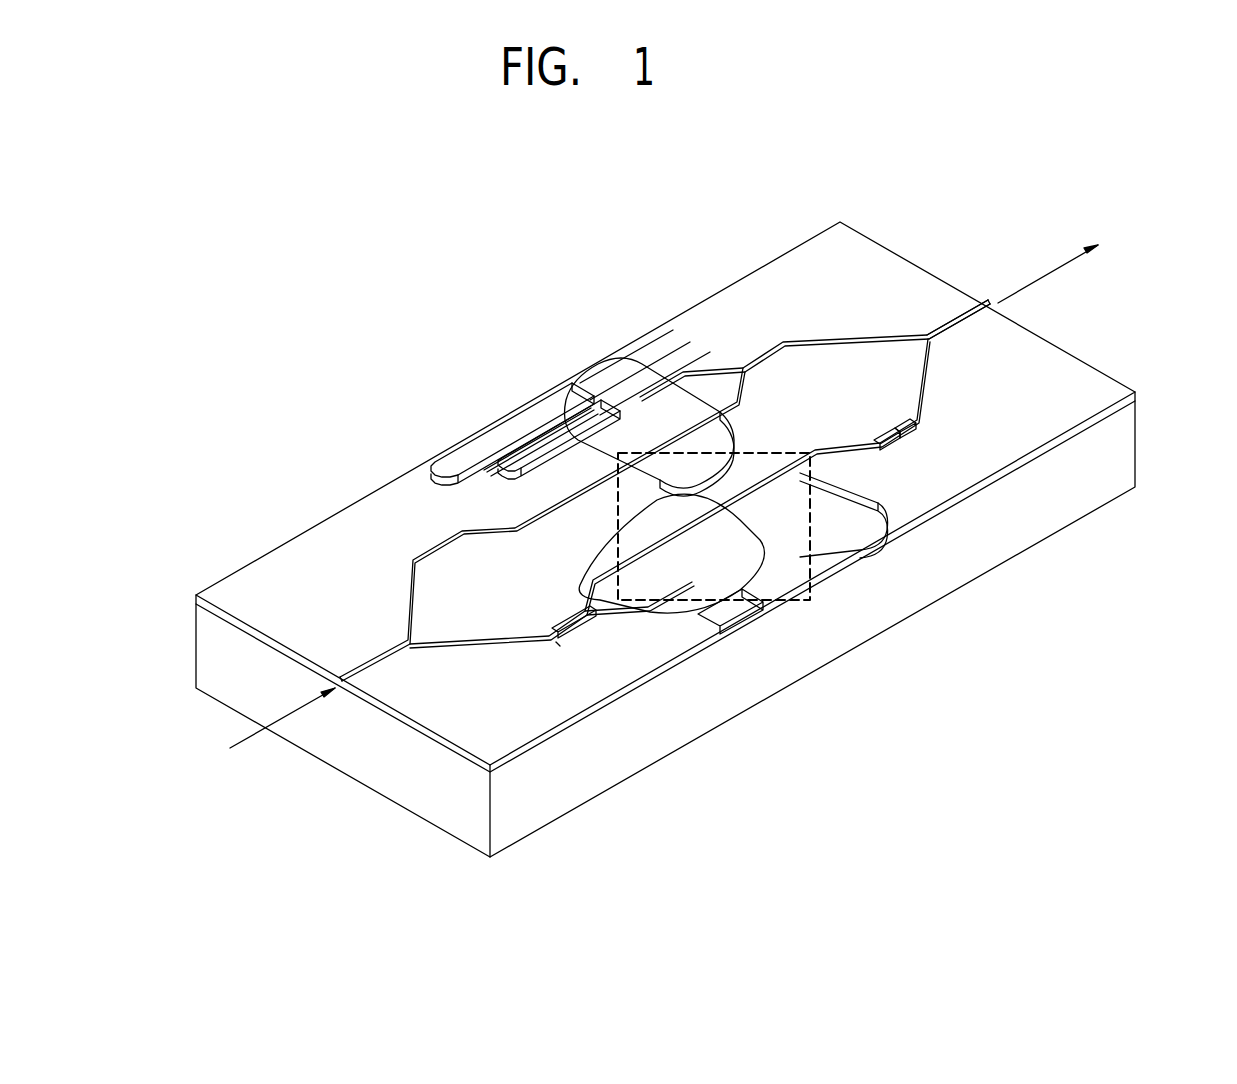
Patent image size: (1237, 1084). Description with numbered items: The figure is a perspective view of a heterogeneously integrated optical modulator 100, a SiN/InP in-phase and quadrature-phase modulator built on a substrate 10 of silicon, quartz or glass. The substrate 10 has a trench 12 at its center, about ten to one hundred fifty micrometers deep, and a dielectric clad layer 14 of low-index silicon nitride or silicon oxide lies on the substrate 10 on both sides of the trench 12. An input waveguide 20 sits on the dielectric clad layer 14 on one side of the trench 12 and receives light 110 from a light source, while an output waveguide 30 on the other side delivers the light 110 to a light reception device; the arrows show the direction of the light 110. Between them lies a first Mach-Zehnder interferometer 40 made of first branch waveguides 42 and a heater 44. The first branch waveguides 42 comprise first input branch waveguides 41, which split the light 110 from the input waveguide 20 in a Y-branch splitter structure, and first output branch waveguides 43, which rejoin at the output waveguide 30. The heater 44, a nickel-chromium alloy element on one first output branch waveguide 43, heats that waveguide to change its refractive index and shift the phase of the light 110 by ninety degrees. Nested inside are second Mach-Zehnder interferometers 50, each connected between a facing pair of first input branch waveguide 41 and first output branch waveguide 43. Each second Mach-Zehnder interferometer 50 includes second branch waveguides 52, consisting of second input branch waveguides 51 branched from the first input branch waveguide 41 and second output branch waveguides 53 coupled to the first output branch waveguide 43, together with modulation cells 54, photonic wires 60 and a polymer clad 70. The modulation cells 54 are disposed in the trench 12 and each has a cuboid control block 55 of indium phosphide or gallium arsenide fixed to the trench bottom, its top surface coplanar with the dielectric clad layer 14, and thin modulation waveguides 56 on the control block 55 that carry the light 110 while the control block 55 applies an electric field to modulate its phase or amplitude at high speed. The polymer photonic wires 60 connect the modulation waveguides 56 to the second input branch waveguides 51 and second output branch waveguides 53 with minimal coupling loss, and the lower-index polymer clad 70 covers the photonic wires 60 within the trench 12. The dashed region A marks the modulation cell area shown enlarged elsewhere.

The heterogeneously integrated optical modulator 100 is at (278, 290).
The substrate 10 is at (1128, 447).
The trench 12 is at (558, 642).
The dielectric clad layer 14 is at (1137, 394).
The input waveguide 20 is at (380, 662).
The output waveguide 30 is at (945, 335).
The first Mach-Zehnder interferometer 40 is at (955, 919).
The first input branch waveguides 41 is at (583, 620).
The first branch waveguides 42 is at (887, 876).
The first output branch waveguides 43 is at (880, 446).
The heater 44 is at (904, 433).
The second Mach-Zehnder interferometers 50 is at (560, 432).
The second input branch waveguides 51 is at (457, 452).
The second branch waveguides 52 is at (495, 413).
The second output branch waveguides 53 is at (520, 424).
The modulation cells 54 is at (495, 389).
The control block 55 is at (548, 428).
The modulation waveguides 56 is at (578, 434).
The photonic wires 60 is at (613, 398).
The polymer clad 70 is at (638, 392).
The light 110 is at (250, 738).
The region A is at (780, 453).